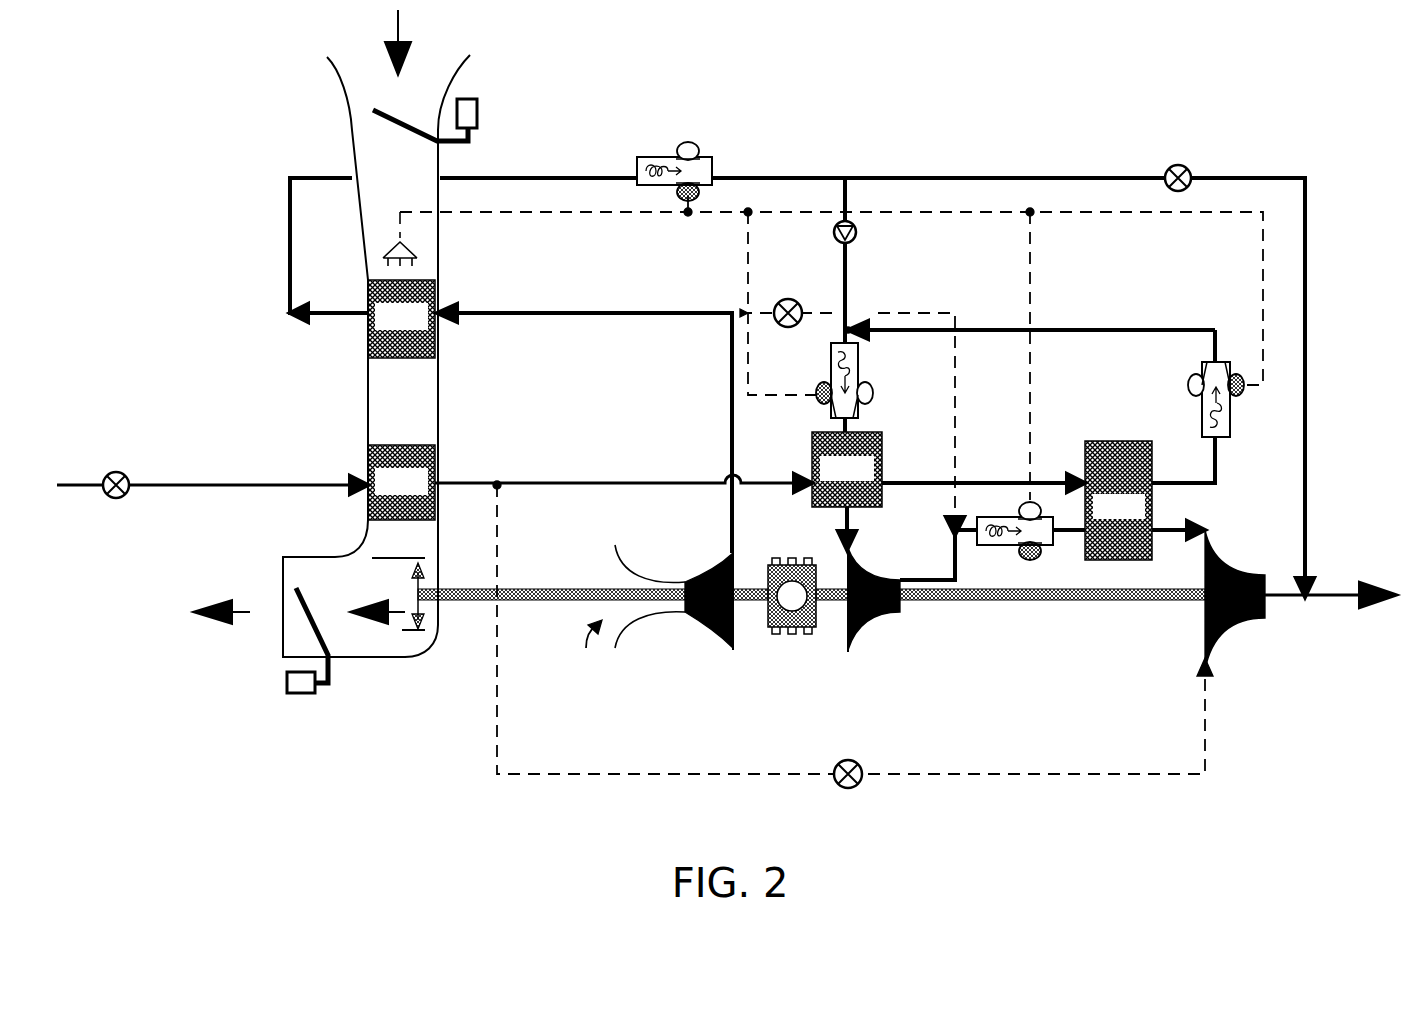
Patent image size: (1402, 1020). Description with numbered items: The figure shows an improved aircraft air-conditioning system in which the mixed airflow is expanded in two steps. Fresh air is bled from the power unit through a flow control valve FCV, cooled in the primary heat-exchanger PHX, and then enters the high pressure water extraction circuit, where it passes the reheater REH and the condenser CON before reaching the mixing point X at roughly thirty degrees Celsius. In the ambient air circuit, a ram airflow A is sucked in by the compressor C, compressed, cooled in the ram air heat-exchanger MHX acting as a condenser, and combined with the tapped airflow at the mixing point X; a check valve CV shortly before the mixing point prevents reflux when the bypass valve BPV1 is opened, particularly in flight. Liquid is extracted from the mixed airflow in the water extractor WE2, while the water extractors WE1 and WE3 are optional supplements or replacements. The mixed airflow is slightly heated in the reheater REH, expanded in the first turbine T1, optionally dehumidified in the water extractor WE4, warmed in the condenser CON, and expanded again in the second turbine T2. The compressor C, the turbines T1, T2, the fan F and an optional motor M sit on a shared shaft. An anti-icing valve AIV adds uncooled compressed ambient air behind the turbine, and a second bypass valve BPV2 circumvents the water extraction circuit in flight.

The ram air heat-exchanger MHX is at (401, 319).
The primary heat-exchanger PHX is at (401, 482).
The flow control valve FCV is at (116, 474).
The water extractor WE3 is at (674, 162).
The bypass valve BPV1 is at (1186, 165).
The check valve CV is at (860, 232).
The anti-icing valve AIV is at (788, 302).
The mixing point X is at (850, 328).
The water extractor WE2 is at (866, 380).
The water extractor WE1 is at (1198, 399).
The reheater REH is at (847, 469).
The condenser CON is at (1118, 500).
The water extractor WE4 is at (1015, 540).
The fan F is at (398, 594).
The compressor C is at (674, 602).
The motor M is at (792, 596).
The first turbine T1 is at (879, 603).
The second turbine T2 is at (1236, 600).
The ram airflow A is at (590, 650).
The second bypass valve BPV2 is at (852, 791).